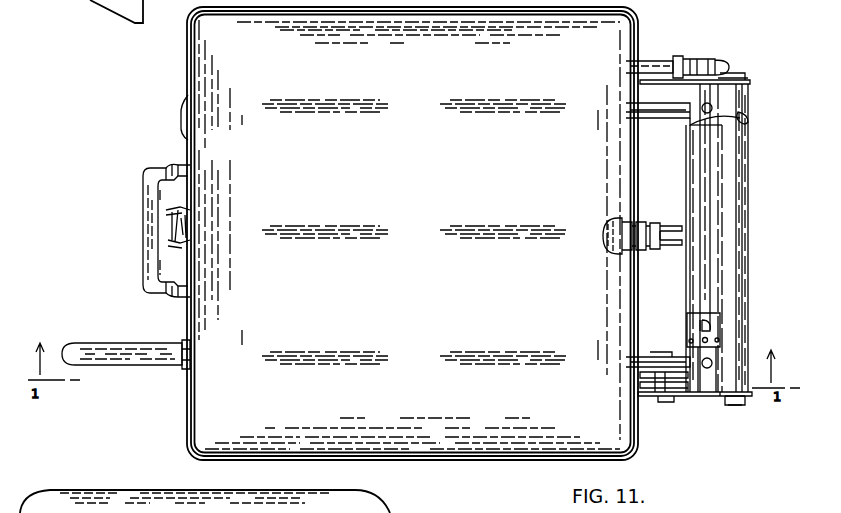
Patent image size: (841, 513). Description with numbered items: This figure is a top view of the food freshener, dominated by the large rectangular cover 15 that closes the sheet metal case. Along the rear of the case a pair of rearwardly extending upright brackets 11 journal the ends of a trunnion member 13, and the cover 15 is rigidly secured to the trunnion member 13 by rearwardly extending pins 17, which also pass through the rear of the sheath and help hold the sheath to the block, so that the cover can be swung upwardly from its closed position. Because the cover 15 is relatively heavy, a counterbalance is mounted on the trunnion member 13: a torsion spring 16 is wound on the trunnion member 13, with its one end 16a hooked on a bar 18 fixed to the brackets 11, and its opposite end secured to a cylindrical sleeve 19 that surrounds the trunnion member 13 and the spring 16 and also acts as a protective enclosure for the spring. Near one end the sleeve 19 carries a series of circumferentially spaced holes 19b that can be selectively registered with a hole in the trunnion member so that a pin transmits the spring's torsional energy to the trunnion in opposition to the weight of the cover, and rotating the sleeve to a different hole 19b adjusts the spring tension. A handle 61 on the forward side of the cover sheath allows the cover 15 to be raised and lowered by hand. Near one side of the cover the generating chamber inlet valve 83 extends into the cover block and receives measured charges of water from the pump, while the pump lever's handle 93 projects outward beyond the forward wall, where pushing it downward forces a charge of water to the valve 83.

The upright brackets 11 is at (652, 86).
The trunnion member 13 is at (719, 396).
The cover 15 is at (409, 233).
The torsion spring 16 is at (690, 119).
The spring end 16a is at (750, 118).
The pins 17 is at (657, 118).
The bar 18 is at (745, 188).
The cylindrical sleeve 19 is at (688, 181).
The circumferentially spaced holes 19b is at (679, 338).
The handle 61 is at (158, 178).
The generating chamber inlet valve 83 is at (672, 62).
The handle 93 is at (75, 343).